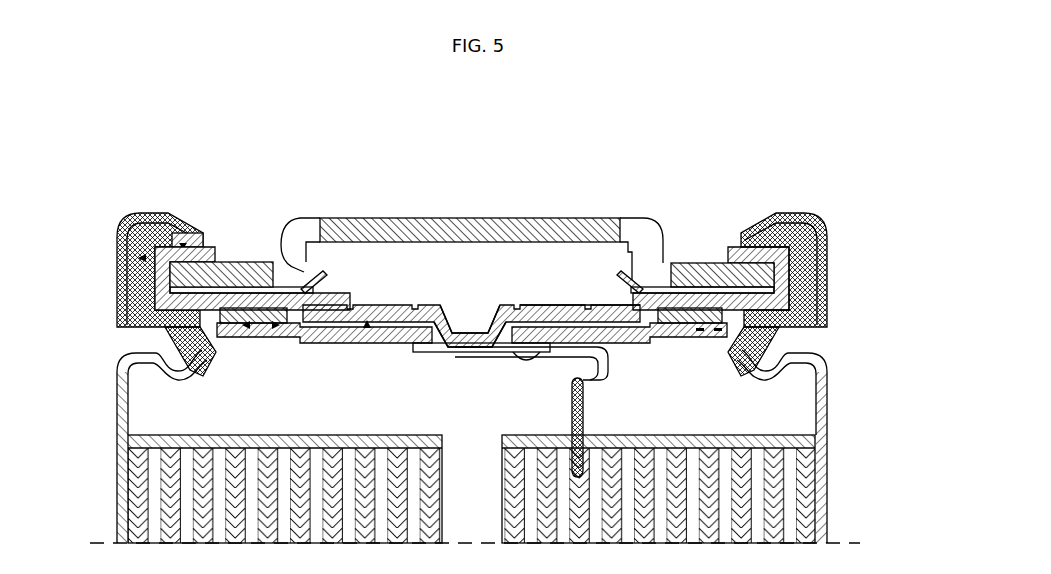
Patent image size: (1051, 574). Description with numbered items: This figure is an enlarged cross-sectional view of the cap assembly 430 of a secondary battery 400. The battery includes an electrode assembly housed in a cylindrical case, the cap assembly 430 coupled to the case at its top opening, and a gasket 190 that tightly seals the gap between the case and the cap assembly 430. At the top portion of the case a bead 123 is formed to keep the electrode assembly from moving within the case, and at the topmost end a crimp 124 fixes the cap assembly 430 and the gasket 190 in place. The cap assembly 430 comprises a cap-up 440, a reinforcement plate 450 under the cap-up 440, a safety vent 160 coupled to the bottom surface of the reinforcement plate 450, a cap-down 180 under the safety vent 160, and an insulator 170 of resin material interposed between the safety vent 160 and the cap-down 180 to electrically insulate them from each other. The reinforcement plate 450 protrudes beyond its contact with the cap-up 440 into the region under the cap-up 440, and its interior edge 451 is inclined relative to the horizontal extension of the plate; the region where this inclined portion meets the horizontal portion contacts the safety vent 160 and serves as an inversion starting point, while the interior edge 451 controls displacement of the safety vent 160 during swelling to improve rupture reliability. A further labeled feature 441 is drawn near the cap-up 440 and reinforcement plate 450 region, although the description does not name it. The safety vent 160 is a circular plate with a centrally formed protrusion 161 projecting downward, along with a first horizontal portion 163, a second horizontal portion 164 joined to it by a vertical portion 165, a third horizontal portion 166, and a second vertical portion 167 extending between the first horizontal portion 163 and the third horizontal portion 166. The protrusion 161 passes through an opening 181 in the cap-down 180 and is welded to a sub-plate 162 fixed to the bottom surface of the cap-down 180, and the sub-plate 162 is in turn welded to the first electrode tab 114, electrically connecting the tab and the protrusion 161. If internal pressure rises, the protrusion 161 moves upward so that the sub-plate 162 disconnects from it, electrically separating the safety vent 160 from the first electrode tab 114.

The secondary battery 400 is at (58, 131).
The first electrode tab 114 is at (583, 412).
The bead 123 is at (120, 425).
The crimp 124 is at (805, 216).
The safety vent 160 is at (605, 305).
The protrusion 161 is at (496, 308).
The sub-plate 162 is at (557, 305).
The first horizontal portion 163 is at (212, 352).
The second horizontal portion 164 is at (366, 330).
The vertical portion 165 is at (303, 328).
The third horizontal portion 166 is at (190, 232).
The second vertical portion 167 is at (115, 257).
The insulator 170 is at (116, 280).
The cap-down 180 is at (430, 245).
The opening 181 is at (455, 306).
The gasket 190 is at (818, 278).
The cap assembly 430 is at (472, 205).
The cap-up 440 is at (474, 218).
The protrusion 441 is at (311, 258).
The reinforcement plate 450 is at (120, 295).
The interior edge 451 is at (280, 260).